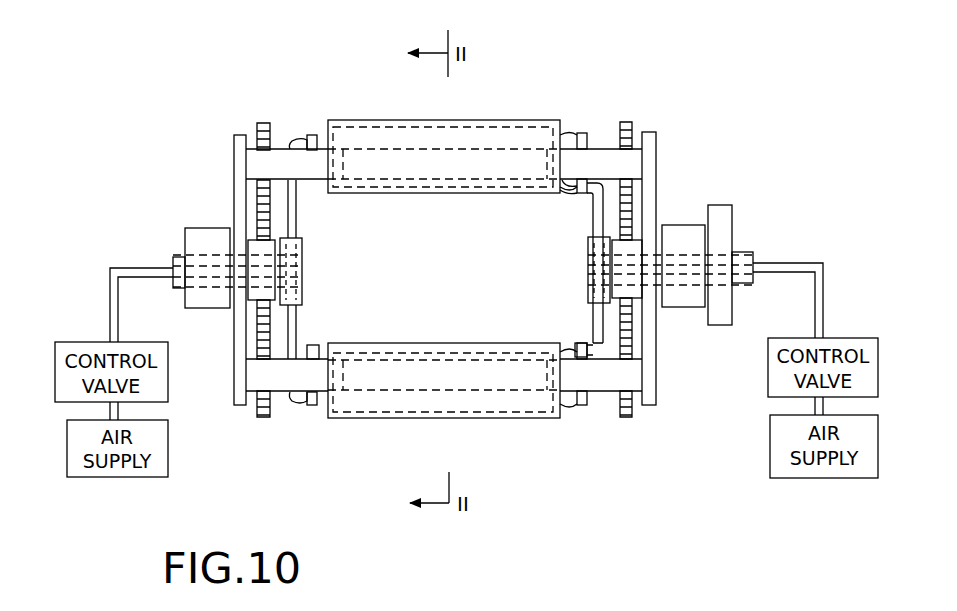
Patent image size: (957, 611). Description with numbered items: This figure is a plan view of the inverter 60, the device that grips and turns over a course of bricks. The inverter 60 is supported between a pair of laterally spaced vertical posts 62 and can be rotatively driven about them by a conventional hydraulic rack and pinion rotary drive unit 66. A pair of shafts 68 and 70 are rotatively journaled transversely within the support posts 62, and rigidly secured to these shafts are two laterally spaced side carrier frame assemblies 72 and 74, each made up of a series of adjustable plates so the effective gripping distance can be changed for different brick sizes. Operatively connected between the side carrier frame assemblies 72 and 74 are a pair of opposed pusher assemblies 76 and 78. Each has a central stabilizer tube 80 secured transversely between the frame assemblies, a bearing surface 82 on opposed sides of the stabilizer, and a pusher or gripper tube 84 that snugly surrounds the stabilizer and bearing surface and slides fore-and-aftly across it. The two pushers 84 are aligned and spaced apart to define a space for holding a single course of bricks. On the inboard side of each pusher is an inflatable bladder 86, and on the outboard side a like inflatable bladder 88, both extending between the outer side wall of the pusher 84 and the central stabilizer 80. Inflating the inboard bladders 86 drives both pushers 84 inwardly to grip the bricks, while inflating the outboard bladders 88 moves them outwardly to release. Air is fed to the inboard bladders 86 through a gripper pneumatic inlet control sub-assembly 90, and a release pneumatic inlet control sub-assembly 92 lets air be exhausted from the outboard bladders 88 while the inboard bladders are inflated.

The inverter 60 is at (720, 105).
The vertical posts 62 is at (202, 235).
The hydraulic rack and pinion rotary drive unit 66 is at (722, 215).
The shaft 68 is at (745, 258).
The shaft 70 is at (173, 262).
The side carrier frame assembly 72 is at (662, 347).
The side carrier frame assembly 74 is at (227, 328).
The pusher assembly 76 is at (355, 428).
The pusher assembly 78 is at (463, 267).
The central stabilizer tube 80 is at (280, 158).
The bearing surface 82 is at (560, 110).
The pusher tube 84 is at (503, 120).
The inboard inflatable bladder 86 is at (565, 183).
The outboard inflatable bladder 88 is at (322, 143).
The gripper pneumatic inlet control sub-assembly 90 is at (575, 272).
The release pneumatic inlet control sub-assembly 92 is at (305, 272).